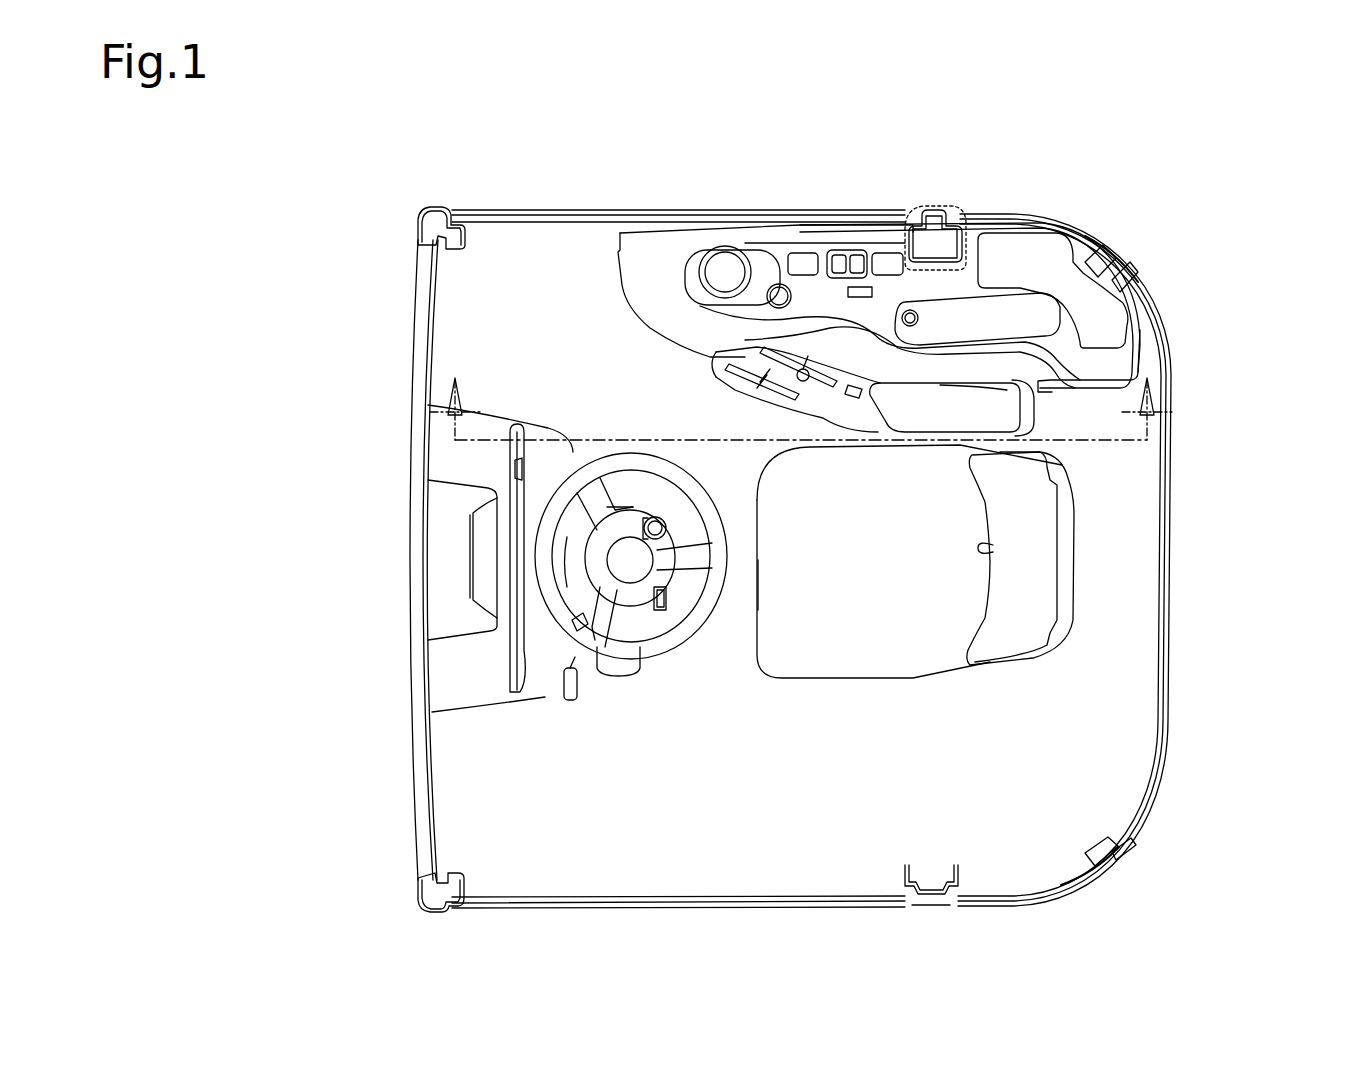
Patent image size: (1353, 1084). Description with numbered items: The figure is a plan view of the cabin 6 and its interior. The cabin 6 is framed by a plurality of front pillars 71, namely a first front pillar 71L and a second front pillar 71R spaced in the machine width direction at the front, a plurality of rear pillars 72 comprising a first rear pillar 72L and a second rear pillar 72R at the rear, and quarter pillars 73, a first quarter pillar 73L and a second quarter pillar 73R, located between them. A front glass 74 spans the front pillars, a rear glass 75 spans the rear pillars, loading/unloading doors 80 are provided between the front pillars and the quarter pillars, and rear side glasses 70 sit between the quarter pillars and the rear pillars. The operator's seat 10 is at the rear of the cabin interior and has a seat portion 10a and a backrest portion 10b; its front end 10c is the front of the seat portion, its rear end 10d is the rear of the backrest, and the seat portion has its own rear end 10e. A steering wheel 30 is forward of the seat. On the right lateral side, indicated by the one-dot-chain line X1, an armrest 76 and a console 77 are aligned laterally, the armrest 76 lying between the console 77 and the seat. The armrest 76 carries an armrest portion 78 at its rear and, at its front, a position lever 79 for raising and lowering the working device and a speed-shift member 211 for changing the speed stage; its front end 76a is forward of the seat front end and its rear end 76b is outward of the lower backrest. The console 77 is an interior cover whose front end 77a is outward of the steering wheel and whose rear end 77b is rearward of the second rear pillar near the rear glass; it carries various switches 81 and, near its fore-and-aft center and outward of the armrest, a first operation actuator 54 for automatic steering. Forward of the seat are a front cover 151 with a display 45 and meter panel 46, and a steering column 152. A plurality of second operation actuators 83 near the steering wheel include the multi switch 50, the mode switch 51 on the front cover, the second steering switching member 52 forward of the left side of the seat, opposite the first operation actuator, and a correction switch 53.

The cabin 6 is at (1168, 224).
The operator's seat 10 is at (941, 600).
The seat portion 10a is at (838, 660).
The backrest portion 10b is at (1028, 492).
The front end 10c is at (750, 602).
The rear end 10d is at (1076, 588).
The rear end 10e is at (993, 547).
The steering wheel 30 is at (631, 573).
The display 45 is at (485, 555).
The meter panel 46 is at (526, 692).
The first operation actuator 54 is at (868, 293).
The rear side glass 70 is at (1100, 234).
The front pillar 71 is at (356, 554).
The second front pillar 71R is at (428, 215).
The first front pillar 71L is at (428, 897).
The rear pillar 72 is at (1192, 555).
The second rear pillar 72R is at (1120, 272).
The first rear pillar 72L is at (1116, 835).
The quarter pillar 73 is at (990, 521).
The second quarter pillar 73R is at (956, 222).
The first quarter pillar 73L is at (958, 882).
The front glass 74 is at (410, 455).
The rear glass 75 is at (1172, 468).
The armrest 76 is at (856, 429).
The front end 76a is at (716, 362).
The rear end 76b is at (1022, 420).
The console 77 is at (887, 259).
The front end 77a is at (622, 290).
The rear end 77b is at (1140, 352).
The armrest portion 78 is at (945, 415).
The position lever 79 is at (802, 372).
The loading/unloading door 80 is at (640, 208).
The switches 81 is at (835, 249).
The second operation actuator 83 is at (665, 580).
The multi switch 50 is at (668, 528).
The mode switch 51 is at (524, 470).
The second steering switching member 52 is at (572, 702).
The correction switch 53 is at (666, 600).
The front cover 151 is at (520, 430).
The steering column 152 is at (628, 507).
The speed-shift member 211 is at (748, 392).
The one-dot-chain line X1 is at (1170, 422).